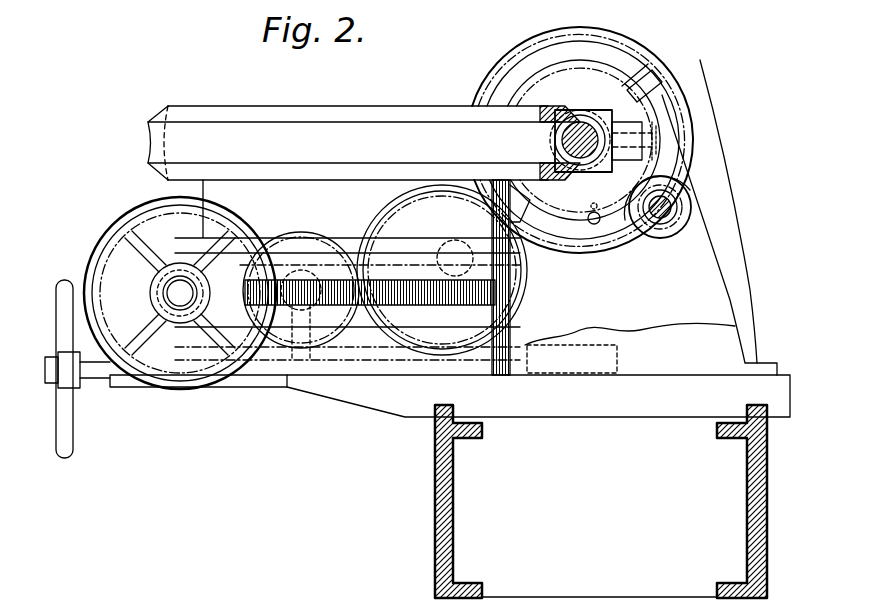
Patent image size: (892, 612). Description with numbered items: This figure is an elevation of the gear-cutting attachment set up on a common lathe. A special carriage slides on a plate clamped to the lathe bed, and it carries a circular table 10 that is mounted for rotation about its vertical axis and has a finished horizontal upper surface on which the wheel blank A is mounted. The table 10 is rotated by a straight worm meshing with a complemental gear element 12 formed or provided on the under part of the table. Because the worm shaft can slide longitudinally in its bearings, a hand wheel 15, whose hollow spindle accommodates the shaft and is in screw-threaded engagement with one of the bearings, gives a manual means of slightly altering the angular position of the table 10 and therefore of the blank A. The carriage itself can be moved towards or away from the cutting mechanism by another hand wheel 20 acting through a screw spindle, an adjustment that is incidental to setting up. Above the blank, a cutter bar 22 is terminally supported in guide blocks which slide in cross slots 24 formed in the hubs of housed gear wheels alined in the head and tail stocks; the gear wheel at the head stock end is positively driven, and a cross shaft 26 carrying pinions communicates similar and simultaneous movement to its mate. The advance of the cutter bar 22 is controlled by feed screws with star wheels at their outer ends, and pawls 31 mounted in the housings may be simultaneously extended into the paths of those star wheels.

The circular table 10 is at (450, 329).
The complemental gear element 12 is at (505, 293).
The hand wheel 15 is at (122, 236).
The hand wheel 20 is at (75, 440).
The cutter bar 22 is at (556, 118).
The cross slots 24 is at (640, 125).
The cross shaft 26 is at (668, 222).
The pawls 31 is at (622, 245).
The wheel blank A is at (362, 108).